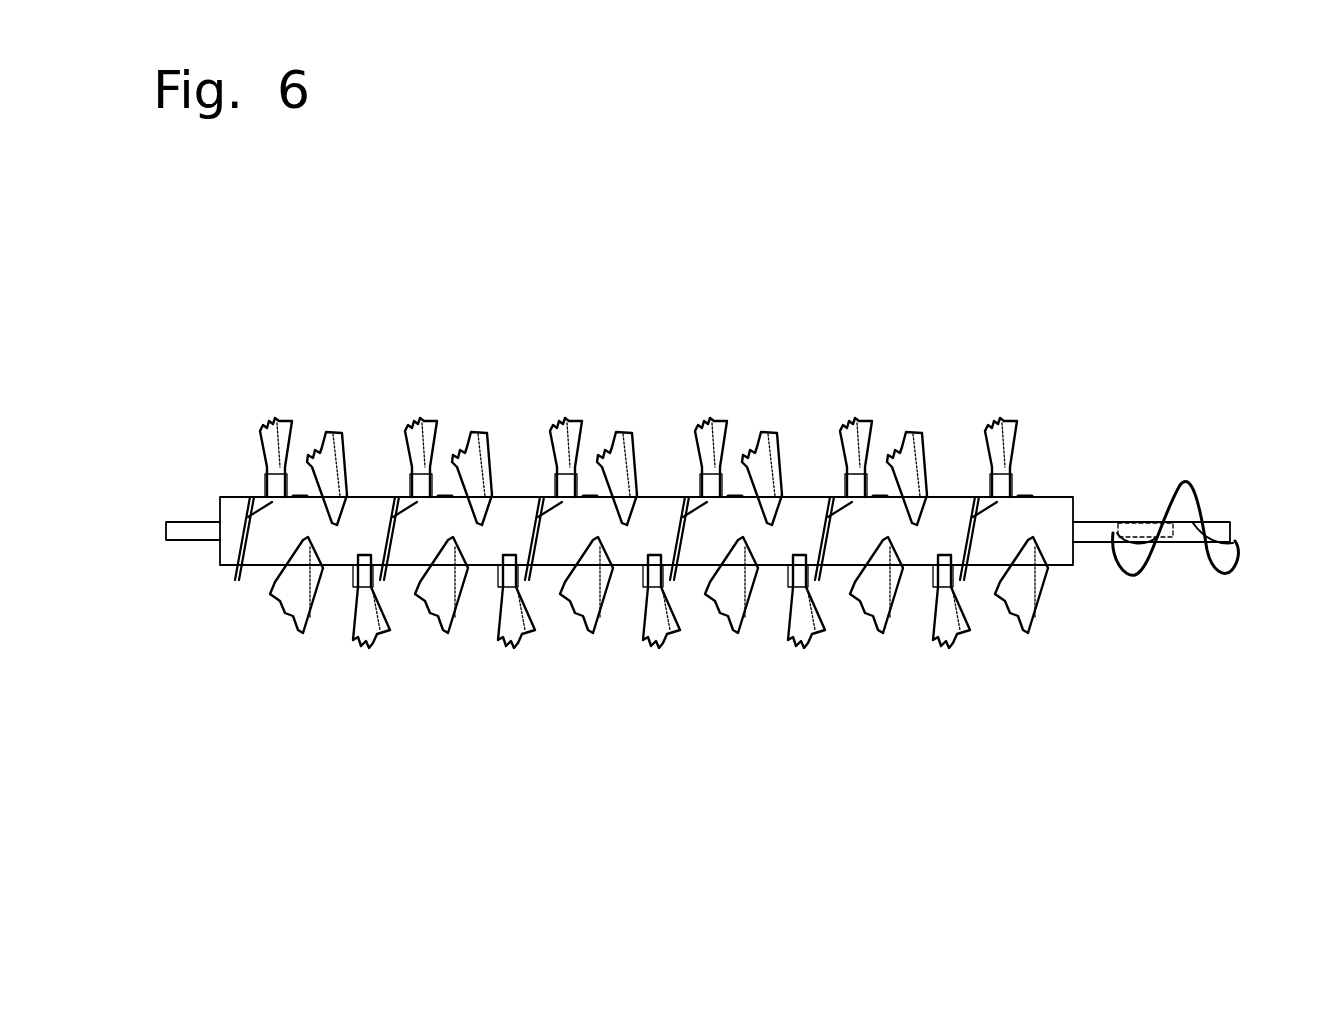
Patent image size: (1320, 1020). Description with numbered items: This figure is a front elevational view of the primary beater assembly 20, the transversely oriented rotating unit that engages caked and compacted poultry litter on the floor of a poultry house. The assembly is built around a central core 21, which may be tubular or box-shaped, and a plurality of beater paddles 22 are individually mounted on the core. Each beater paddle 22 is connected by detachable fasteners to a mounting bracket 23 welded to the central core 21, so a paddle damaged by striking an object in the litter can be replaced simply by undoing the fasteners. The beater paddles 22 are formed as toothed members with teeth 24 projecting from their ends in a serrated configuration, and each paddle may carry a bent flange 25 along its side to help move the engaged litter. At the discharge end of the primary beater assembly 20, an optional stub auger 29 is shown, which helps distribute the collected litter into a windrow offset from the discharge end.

The primary beater assembly 20 is at (587, 350).
The central core 21 is at (1060, 547).
The beater paddle 22 is at (550, 467).
The mounting bracket 23 is at (383, 545).
The teeth 24 is at (270, 437).
The bent flange 25 is at (830, 495).
The stub auger 29 is at (1183, 483).